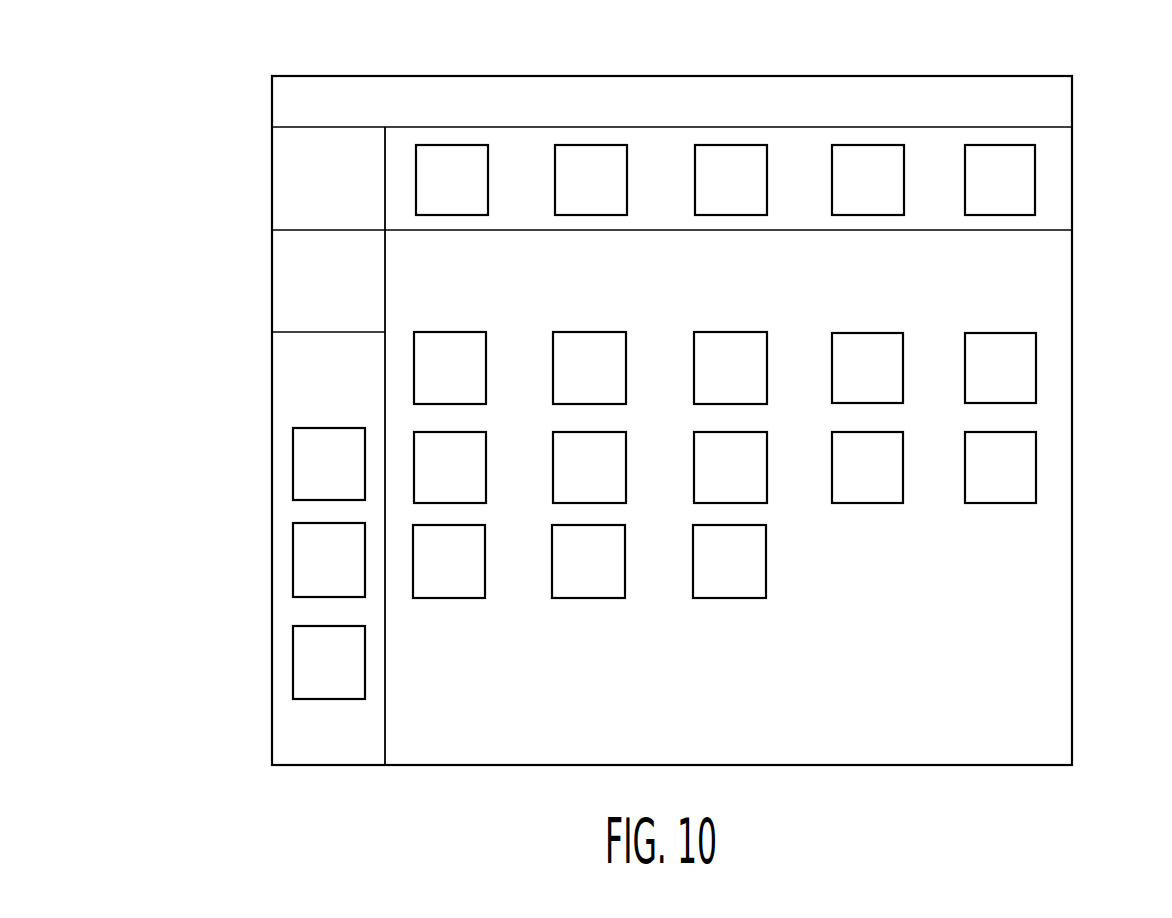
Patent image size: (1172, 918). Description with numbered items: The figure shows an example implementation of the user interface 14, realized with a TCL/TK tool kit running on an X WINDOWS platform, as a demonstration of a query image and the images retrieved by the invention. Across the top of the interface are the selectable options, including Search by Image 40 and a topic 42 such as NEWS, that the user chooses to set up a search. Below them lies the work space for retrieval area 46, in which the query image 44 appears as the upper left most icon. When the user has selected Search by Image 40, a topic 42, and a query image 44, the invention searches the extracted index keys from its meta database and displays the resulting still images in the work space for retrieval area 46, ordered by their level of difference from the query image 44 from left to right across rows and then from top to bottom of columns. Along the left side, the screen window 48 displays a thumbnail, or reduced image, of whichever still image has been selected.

The user interface 14 is at (950, 76).
The Search by Image 40 is at (293, 467).
The topic 42 is at (555, 174).
The query image 44 is at (448, 332).
The work space for retrieval area 46 is at (1023, 610).
The screen window 48 is at (313, 283).